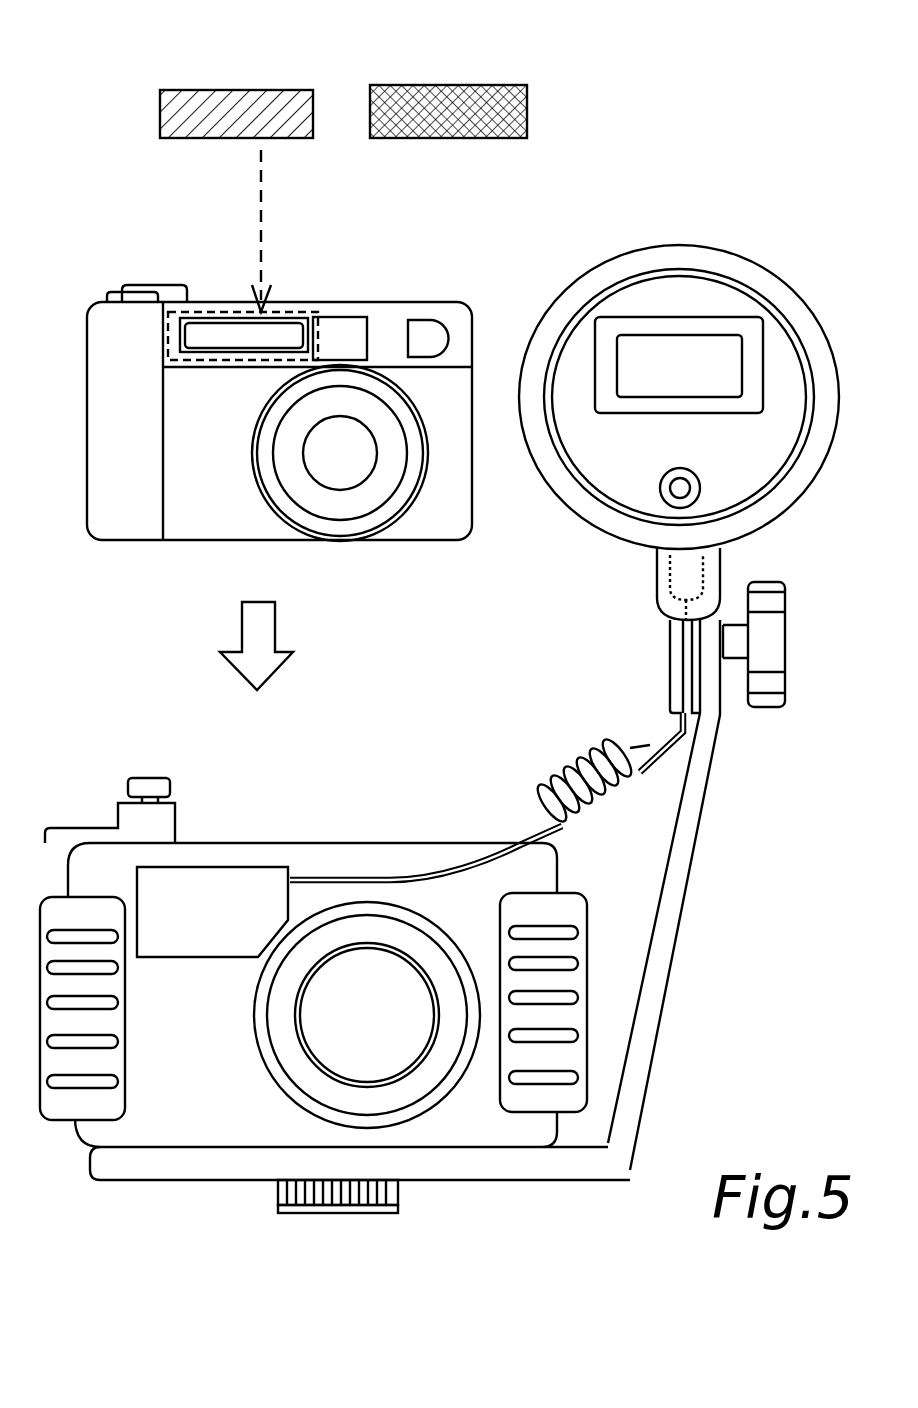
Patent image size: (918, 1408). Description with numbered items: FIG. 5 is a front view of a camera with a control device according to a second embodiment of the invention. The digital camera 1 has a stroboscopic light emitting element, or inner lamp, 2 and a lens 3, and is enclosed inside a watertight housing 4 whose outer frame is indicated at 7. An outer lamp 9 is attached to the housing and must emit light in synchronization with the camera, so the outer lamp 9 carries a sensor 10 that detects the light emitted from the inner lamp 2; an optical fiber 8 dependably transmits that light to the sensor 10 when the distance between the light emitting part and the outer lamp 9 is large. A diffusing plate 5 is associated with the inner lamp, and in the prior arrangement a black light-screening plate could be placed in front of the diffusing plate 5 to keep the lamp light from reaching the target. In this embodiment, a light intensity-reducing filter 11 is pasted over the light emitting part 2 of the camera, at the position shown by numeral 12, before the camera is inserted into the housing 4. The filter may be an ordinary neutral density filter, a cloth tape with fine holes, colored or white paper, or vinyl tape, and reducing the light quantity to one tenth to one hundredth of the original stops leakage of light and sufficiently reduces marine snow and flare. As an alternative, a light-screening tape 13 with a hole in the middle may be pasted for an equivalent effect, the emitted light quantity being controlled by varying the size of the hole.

The digital camera 1 is at (381, 302).
The stroboscopic light emitting element 2 is at (240, 312).
The lens 3 is at (373, 498).
The watertight housing 4 is at (177, 1138).
The diffusing plate 5 is at (289, 867).
The outer frame 7 is at (450, 1090).
The optical fiber 8 is at (465, 855).
The outer lamp 9 is at (553, 300).
The sensor 10 is at (668, 570).
The light intensity-reducing filter 11 is at (278, 90).
The pasted position of the filter 12 is at (298, 312).
The light-screening tape with a hole 13 is at (468, 85).